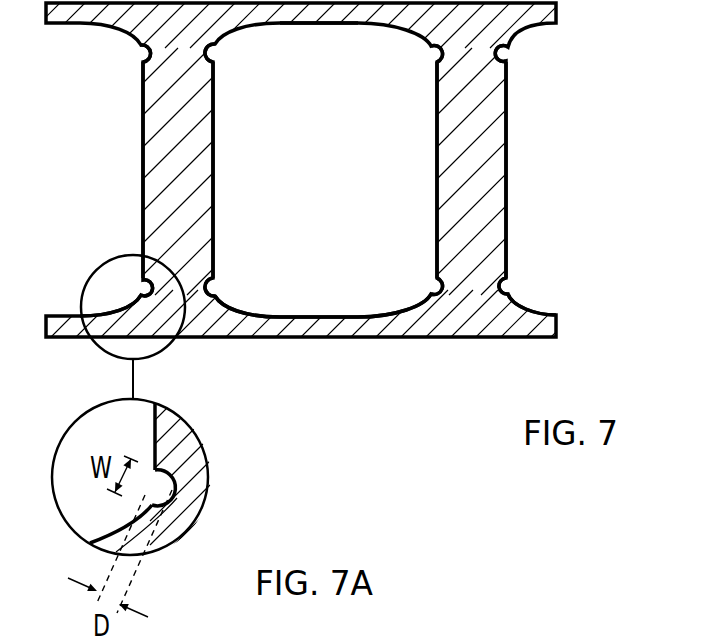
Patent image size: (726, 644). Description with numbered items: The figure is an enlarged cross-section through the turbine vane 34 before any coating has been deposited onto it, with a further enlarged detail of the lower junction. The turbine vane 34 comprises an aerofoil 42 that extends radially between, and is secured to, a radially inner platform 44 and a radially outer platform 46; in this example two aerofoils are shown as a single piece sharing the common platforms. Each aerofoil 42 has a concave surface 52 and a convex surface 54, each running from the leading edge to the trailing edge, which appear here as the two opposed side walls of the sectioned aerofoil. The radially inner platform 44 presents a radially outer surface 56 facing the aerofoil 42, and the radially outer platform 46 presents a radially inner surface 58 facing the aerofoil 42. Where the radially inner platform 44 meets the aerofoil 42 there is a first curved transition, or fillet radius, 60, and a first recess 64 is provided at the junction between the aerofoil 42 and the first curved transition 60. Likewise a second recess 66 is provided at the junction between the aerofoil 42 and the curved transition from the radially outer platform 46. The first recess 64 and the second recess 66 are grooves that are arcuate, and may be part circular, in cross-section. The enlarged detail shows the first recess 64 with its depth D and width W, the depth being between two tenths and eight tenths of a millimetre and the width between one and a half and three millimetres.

In FIG. 7, the turbine vane 34 is at (108, 173).
In FIG. 7, the aerofoil 42 is at (197, 193).
In FIG. 7, the radially inner platform 44 is at (340, 327).
In FIG. 7, the radially outer platform 46 is at (304, 8).
In FIG. 7, the concave surface 52 is at (213, 170).
In FIG. 7, the convex surface 54 is at (156, 105).
In FIG. 7, the radially outer surface 56 is at (306, 315).
In FIG. 7, the radially inner surface 58 is at (362, 24).
In FIG. 7, the first curved transition 60 is at (222, 312).
In FIG. 7A, the first curved transition 60 is at (130, 528).
In FIG. 7, the first recess 64 is at (151, 291).
In FIG. 7A, the first recess 64 is at (175, 497).
In FIG. 7, the second recess 66 is at (153, 45).